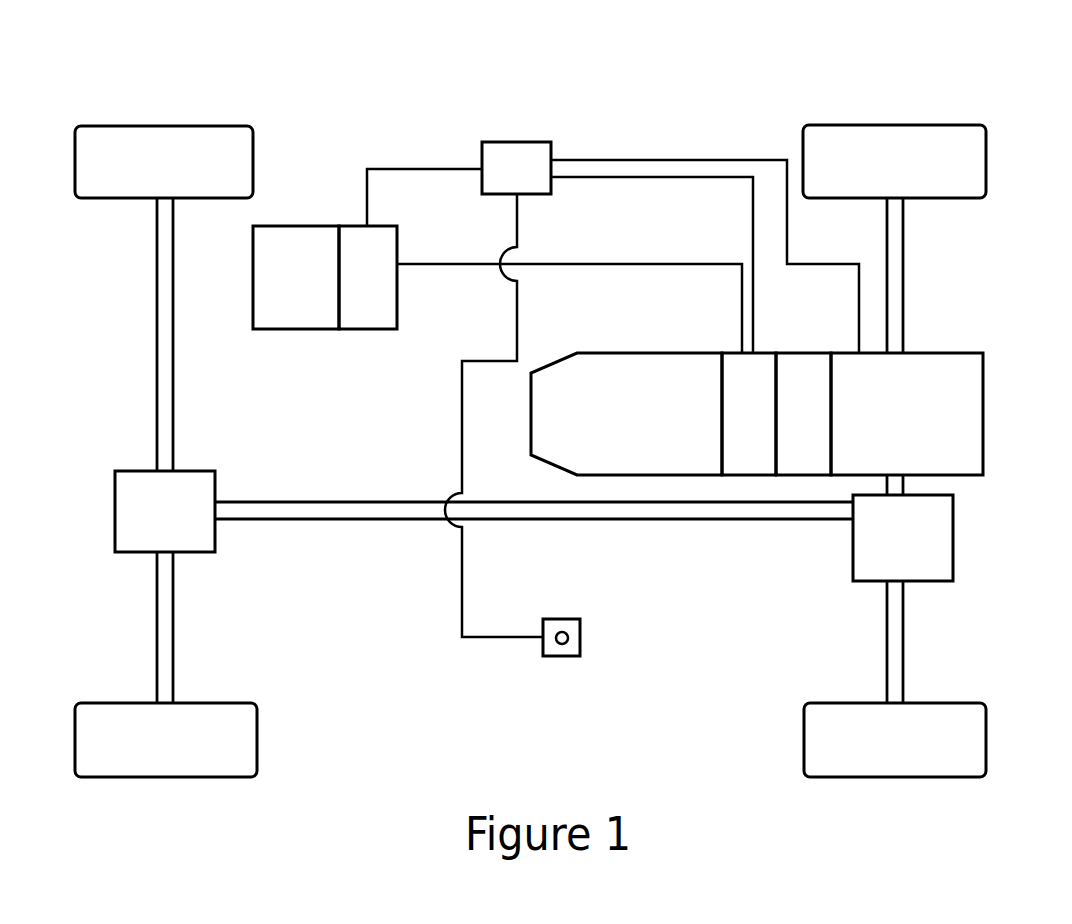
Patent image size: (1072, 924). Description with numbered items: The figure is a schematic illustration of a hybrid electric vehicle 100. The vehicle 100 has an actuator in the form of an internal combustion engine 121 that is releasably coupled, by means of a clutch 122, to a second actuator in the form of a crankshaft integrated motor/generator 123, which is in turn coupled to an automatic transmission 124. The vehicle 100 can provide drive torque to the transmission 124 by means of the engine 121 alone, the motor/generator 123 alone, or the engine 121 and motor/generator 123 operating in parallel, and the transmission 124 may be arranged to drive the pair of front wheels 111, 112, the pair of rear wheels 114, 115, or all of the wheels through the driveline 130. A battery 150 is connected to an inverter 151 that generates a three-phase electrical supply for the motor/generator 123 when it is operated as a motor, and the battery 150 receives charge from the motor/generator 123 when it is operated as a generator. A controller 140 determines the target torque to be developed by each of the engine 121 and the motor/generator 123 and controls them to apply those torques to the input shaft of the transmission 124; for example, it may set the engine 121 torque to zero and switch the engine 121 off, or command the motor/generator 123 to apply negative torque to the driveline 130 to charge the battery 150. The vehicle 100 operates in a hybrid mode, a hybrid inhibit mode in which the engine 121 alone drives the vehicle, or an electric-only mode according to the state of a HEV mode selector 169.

The hybrid electric vehicle 100 is at (960, 83).
The front wheel 111 is at (875, 172).
The front wheel 112 is at (875, 752).
The rear wheel 114 is at (148, 172).
The rear wheel 115 is at (148, 752).
The internal combustion engine 121 is at (887, 424).
The clutch 122 is at (785, 424).
The crankshaft integrated motor/generator 123 is at (731, 424).
The automatic transmission 124 is at (612, 424).
The driveline 130 is at (343, 570).
The controller 140 is at (498, 180).
The battery 150 is at (277, 289).
The inverter 151 is at (349, 289).
The HEV mode selector 169 is at (561, 650).